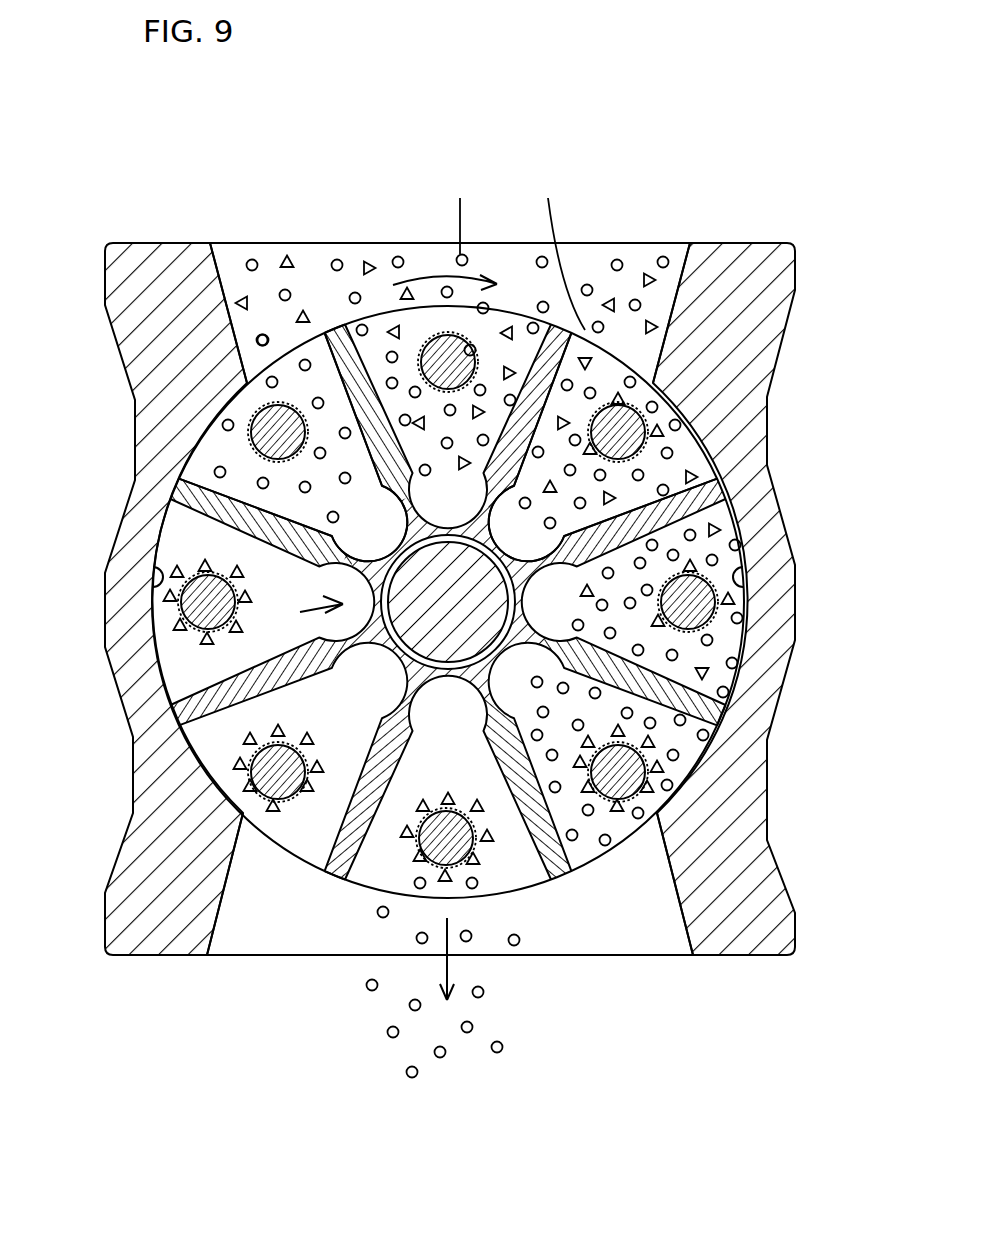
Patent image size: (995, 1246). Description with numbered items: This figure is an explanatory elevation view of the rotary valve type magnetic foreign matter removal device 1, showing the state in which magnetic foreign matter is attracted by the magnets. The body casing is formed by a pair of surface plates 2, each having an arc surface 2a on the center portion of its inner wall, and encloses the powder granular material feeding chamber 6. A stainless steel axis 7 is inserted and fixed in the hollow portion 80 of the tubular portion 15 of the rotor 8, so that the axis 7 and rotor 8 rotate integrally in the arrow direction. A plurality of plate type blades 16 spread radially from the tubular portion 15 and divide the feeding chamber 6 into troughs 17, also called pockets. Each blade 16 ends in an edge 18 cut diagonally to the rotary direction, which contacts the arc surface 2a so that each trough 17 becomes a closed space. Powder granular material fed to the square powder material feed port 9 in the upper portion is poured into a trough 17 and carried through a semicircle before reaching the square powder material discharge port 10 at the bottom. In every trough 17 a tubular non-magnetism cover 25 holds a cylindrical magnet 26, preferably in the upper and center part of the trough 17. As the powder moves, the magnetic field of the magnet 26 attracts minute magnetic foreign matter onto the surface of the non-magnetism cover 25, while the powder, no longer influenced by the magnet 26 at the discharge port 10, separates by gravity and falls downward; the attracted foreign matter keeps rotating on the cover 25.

The rotary valve type magnetic foreign matter removal device 1 is at (700, 198).
The surface plate 2 is at (140, 540).
The arc surface 2a is at (158, 577).
The powder granular material feeding chamber 6 is at (223, 453).
The axis 7 is at (470, 600).
The rotor 8 is at (300, 612).
The powder material feed port 9 is at (588, 355).
The powder material discharge port 10 is at (617, 935).
The tubular portion 15 is at (670, 437).
The plate type blade 16 is at (370, 375).
The trough 17 is at (177, 530).
The edge 18 is at (330, 333).
The non-magnetism cover 25 is at (268, 408).
The magnet 26 is at (250, 418).
The hollow portion 80 is at (195, 740).